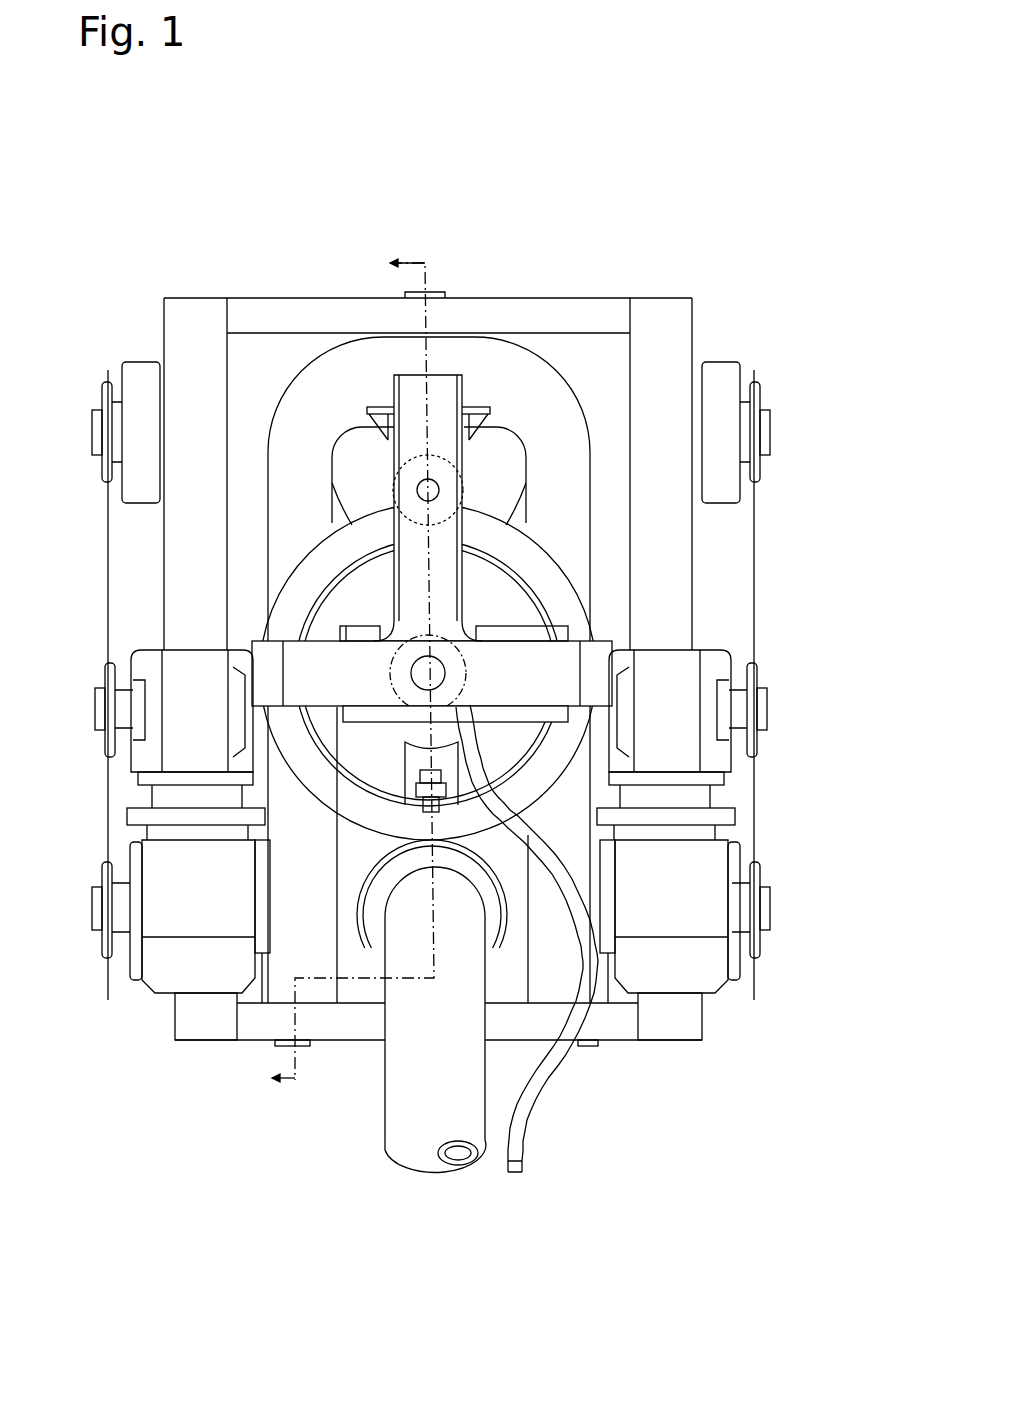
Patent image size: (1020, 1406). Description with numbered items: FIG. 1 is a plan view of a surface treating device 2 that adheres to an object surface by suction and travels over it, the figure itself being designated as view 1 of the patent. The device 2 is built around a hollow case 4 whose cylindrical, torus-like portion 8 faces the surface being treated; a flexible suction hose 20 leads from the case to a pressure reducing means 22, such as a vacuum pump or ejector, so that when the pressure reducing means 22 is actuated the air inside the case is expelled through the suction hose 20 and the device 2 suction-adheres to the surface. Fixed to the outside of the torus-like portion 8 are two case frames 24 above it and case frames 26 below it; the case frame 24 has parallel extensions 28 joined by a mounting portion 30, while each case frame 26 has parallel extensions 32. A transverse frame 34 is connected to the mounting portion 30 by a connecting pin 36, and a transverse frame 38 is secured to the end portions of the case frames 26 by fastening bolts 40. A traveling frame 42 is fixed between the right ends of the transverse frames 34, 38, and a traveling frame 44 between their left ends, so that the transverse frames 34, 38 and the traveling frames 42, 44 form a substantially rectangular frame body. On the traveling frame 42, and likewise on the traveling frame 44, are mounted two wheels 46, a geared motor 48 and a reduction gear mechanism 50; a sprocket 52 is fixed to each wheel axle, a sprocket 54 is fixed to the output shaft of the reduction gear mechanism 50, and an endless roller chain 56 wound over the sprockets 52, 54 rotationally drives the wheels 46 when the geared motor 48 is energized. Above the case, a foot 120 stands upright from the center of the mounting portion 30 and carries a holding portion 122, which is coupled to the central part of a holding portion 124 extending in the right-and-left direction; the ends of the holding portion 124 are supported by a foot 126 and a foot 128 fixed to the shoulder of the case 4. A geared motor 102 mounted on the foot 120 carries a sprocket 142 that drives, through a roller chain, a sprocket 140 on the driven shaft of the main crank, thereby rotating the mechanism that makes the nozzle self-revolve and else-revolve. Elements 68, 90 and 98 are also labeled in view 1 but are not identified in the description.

The section line 1- 1 is at (287, 1113).
The surface treating device 2 is at (638, 217).
The case 4 is at (298, 550).
The cylindrical portion 8 is at (598, 553).
The flexible suction hose 20 is at (400, 1115).
The pressure reducing means 22 is at (435, 1167).
The case frame 24 is at (330, 378).
The case frame 26 is at (272, 988).
The extensions 28 is at (270, 460).
The mounting portion 30 is at (455, 376).
The extensions 32 is at (343, 913).
The transverse frame 34 is at (344, 300).
The connecting pin 36 is at (440, 293).
The transverse frame 38 is at (628, 1030).
The fastening bolts 40 is at (310, 1047).
The traveling frame 42 is at (695, 565).
The traveling frame 44 is at (180, 572).
The wheels 46 is at (140, 362).
The geared motor 48 is at (172, 972).
The reduction gear mechanism 50 is at (184, 738).
The sprocket 52 is at (105, 382).
The sprocket 54 is at (103, 743).
The endless roller chain 56 is at (107, 507).
The mounting plate 68 is at (555, 723).
The hose 90 is at (545, 1083).
The hose outlet 98 is at (515, 1176).
The geared motor 102 is at (540, 368).
The foot 120 is at (470, 372).
The holding portion 122 is at (332, 480).
The holding portion 124 is at (303, 690).
The foot 126 is at (282, 665).
The foot 128 is at (632, 638).
The sprocket 140 is at (628, 563).
The sprocket 142 is at (463, 488).